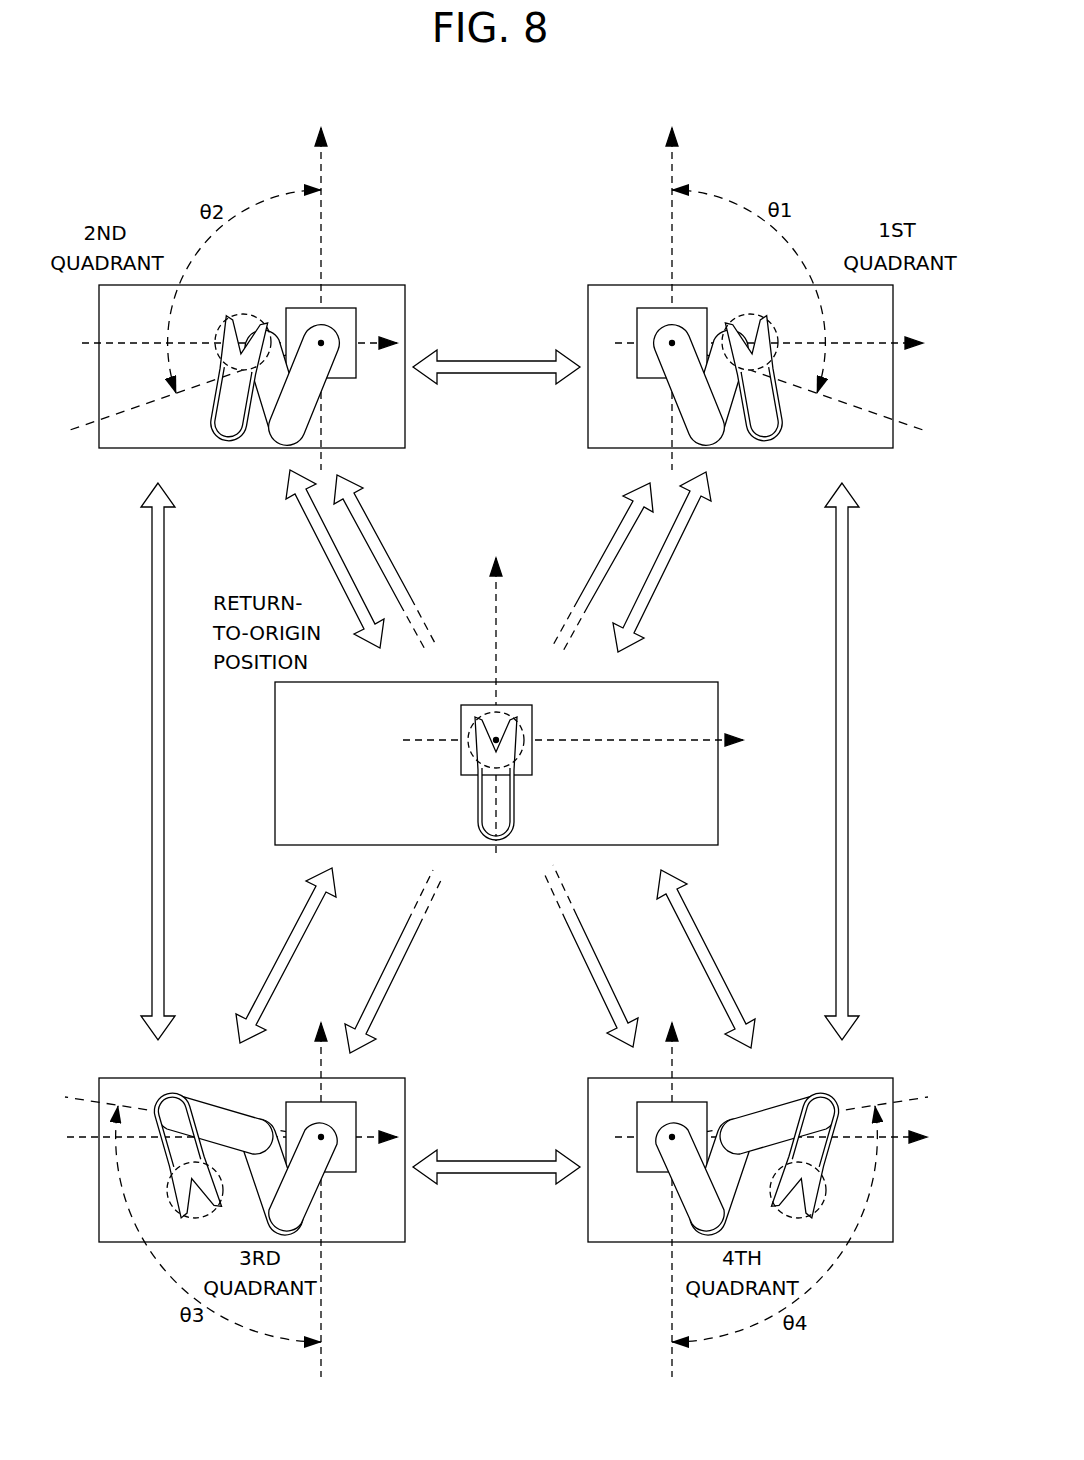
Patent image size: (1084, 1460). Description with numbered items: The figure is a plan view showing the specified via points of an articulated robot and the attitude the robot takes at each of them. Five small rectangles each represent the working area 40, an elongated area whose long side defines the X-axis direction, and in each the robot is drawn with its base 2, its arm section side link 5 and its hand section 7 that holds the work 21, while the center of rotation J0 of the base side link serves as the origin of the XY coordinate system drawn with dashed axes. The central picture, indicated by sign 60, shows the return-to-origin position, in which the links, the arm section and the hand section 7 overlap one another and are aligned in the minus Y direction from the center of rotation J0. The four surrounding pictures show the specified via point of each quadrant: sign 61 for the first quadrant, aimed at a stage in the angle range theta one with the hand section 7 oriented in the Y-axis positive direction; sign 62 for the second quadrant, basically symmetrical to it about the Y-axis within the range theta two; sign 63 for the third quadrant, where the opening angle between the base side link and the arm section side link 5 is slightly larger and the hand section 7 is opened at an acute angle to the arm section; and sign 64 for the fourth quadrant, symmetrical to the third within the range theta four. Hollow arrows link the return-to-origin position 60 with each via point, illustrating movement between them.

The base 2 is at (356, 314).
The arm section side link 5 is at (278, 418).
The hand section 7 is at (225, 413).
The work 21 is at (487, 705).
The working area 40 is at (258, 289).
The return-to-origin position 60 is at (728, 652).
The specified via point of the 1st quadrant 61 is at (590, 223).
The specified via point of the 2nd quadrant 62 is at (393, 227).
The specified via point of the 3rd quadrant 63 is at (418, 1077).
The specified via point of the 4th quadrant 64 is at (575, 1067).
The center of rotation of the base side link J0 is at (321, 343).